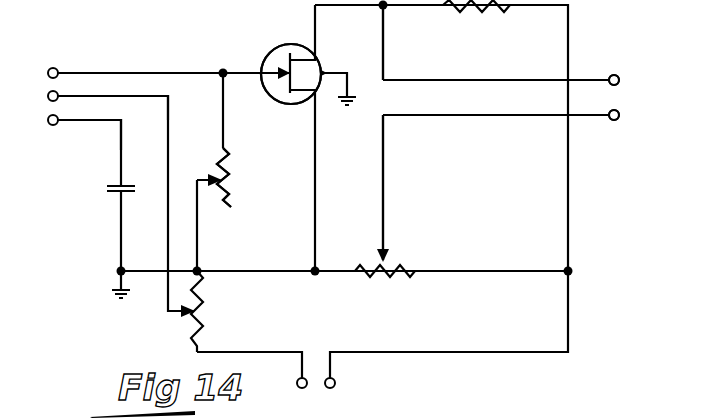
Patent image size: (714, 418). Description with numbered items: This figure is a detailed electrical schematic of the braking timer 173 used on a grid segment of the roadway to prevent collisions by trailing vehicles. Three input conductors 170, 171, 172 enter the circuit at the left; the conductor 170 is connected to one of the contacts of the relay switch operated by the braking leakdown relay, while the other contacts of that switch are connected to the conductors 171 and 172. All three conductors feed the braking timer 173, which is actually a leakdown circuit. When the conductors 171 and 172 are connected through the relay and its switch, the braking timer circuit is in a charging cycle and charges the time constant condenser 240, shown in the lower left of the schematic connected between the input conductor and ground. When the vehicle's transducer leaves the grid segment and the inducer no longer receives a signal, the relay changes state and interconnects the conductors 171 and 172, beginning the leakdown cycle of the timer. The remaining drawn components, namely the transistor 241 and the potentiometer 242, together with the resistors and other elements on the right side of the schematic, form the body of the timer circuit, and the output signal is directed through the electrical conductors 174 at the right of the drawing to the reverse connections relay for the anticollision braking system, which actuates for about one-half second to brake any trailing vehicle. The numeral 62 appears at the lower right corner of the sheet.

The conductor 170 is at (113, 64).
The conductor 171 is at (170, 118).
The conductor 172 is at (119, 137).
The braking timer 173 is at (586, 178).
The electrical conductors 174 is at (604, 86).
The time constant condenser 240 is at (114, 196).
The transistor 241 is at (286, 104).
The potentiometer 242 is at (238, 194).
The sheet number 62 is at (680, 407).